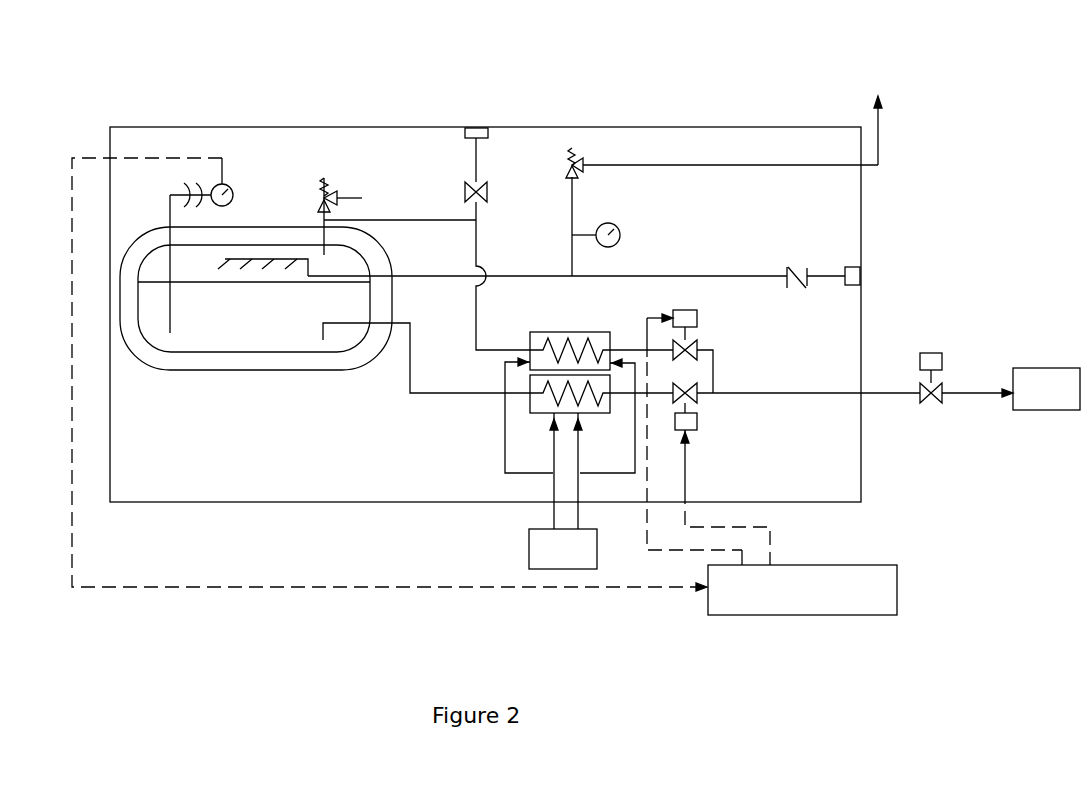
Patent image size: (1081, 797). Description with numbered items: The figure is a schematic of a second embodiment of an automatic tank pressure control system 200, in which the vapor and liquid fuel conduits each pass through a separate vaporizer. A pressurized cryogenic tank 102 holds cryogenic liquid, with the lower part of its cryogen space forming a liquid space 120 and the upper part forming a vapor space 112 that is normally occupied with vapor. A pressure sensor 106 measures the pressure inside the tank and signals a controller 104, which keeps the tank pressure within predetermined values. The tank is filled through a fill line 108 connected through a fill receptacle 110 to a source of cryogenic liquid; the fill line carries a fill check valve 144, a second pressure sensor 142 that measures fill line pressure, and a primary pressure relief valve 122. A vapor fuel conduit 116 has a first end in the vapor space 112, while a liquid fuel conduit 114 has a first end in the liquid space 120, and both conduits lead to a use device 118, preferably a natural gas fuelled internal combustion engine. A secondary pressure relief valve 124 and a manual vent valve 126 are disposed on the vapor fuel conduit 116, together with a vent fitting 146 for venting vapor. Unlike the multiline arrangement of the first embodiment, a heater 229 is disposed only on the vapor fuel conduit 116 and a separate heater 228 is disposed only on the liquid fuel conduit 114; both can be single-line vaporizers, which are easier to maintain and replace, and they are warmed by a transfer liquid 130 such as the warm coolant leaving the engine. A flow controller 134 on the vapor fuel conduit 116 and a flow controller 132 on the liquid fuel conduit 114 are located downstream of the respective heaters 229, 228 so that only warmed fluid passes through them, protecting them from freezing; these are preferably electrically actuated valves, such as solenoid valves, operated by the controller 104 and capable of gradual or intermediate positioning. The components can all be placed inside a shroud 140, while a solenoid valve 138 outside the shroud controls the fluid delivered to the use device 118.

The automatic tank pressure control system 200 is at (870, 77).
The pressurized cryogenic tank 102 is at (150, 368).
The controller 104 is at (802, 590).
The pressure sensor 106 is at (230, 185).
The fill line 108 is at (403, 276).
The fill receptacle 110 is at (853, 265).
The vapor space 112 is at (207, 276).
The liquid fuel conduit 114 is at (410, 360).
The vapor fuel conduit 116 is at (425, 205).
The use device 118 is at (1046, 389).
The liquid space 120 is at (251, 327).
The primary pressure relief valve 122 is at (583, 160).
The secondary pressure relief valve 124 is at (338, 192).
The manual vent valve 126 is at (488, 195).
The transfer liquid 130 is at (563, 491).
The flow controller 132 is at (697, 393).
The flow controller 134 is at (697, 350).
The solenoid valve 138 is at (918, 397).
The shroud 140 is at (861, 207).
The second pressure sensor 142 is at (620, 226).
The fill check valve 144 is at (797, 268).
The vent fitting 146 is at (489, 128).
The heater 228 is at (540, 413).
The heater 229 is at (563, 332).